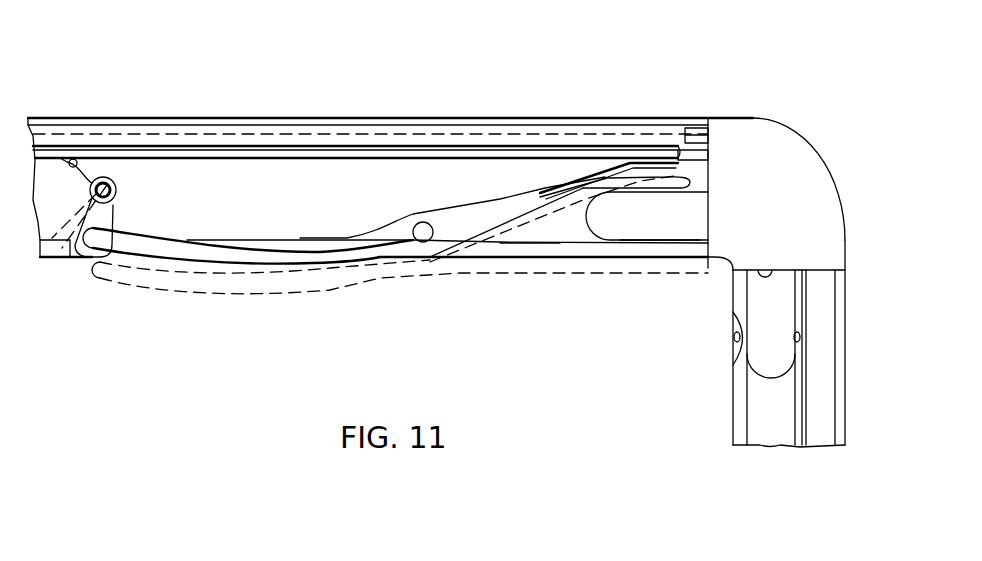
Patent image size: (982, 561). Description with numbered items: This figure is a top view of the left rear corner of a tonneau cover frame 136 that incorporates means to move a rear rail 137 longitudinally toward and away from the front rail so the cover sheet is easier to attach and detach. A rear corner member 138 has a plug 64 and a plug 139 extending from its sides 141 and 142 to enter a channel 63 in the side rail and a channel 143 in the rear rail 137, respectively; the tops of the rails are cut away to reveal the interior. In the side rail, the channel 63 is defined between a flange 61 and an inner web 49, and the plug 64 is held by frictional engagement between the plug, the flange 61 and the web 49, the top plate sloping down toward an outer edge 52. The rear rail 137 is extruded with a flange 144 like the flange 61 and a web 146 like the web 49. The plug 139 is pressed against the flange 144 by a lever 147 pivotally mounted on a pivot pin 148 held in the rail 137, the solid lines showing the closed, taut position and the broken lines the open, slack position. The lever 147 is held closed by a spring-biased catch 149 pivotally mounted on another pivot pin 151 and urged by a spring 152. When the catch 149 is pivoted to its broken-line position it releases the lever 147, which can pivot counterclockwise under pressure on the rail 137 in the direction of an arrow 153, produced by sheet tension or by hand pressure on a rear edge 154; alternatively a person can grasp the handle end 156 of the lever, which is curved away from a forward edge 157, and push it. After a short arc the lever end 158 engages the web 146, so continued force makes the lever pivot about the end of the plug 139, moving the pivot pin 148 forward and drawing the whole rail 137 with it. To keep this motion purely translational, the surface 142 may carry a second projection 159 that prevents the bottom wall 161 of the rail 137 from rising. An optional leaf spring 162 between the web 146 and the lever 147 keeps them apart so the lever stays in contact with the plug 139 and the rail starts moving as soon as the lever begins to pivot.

The inner web 49 is at (813, 430).
The outer edge 52 is at (842, 366).
The flange 61 is at (735, 422).
The channel 63 is at (767, 430).
The plug 64 is at (757, 366).
The tonneau cover frame 136 is at (756, 118).
The rear rail 137 is at (488, 118).
The rear corner member 138 is at (797, 150).
The plug 139 is at (660, 235).
The side 141 is at (765, 272).
The side 142 is at (700, 213).
The channel 143 is at (583, 232).
The flange 144 is at (545, 250).
The web 146 is at (336, 155).
The lever 147 is at (487, 213).
The pivot pin 148 is at (418, 222).
The spring-biased catch 149 is at (115, 223).
The pivot pin 151 is at (110, 198).
The spring 152 is at (70, 160).
The arrow 153 is at (386, 118).
The rear edge 154 is at (292, 118).
The handle end 156 is at (248, 262).
The forward edge 157 is at (496, 255).
The end 158 is at (700, 168).
The second projection 159 is at (690, 127).
The bottom wall 161 is at (565, 232).
The spring 162 is at (586, 180).